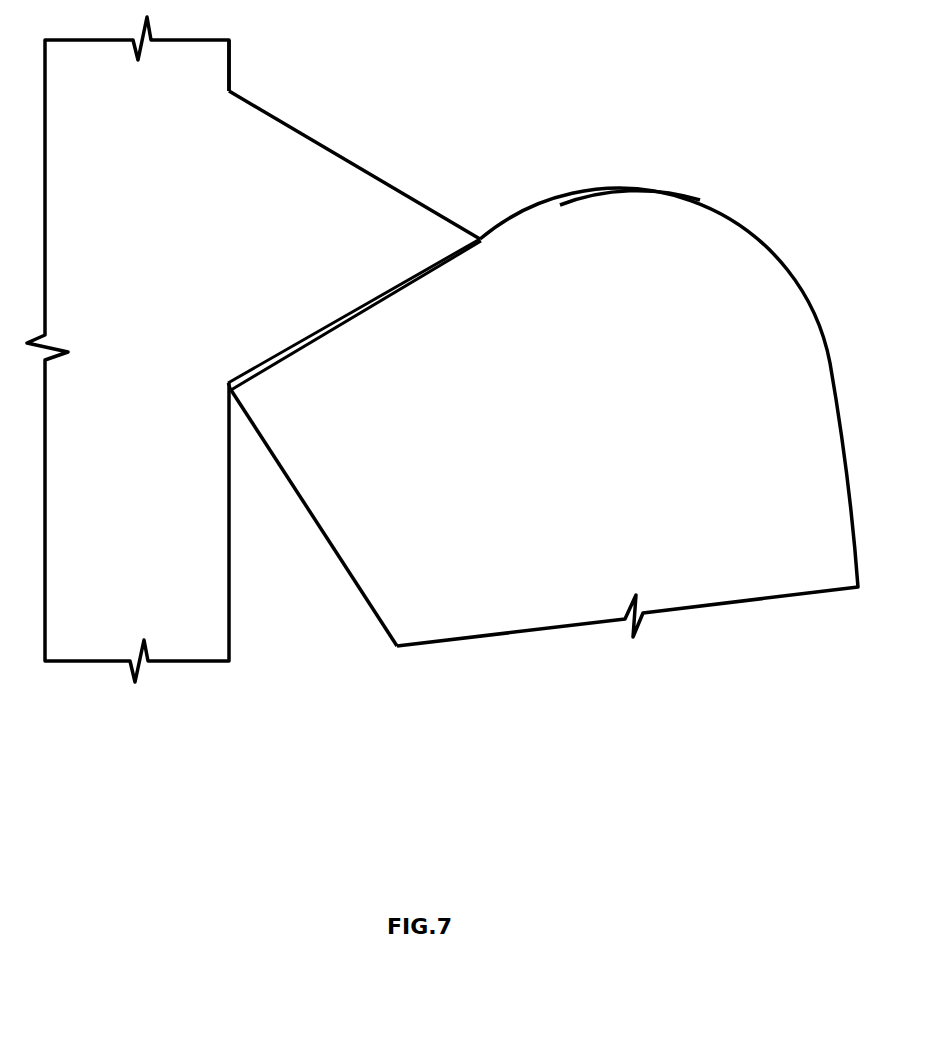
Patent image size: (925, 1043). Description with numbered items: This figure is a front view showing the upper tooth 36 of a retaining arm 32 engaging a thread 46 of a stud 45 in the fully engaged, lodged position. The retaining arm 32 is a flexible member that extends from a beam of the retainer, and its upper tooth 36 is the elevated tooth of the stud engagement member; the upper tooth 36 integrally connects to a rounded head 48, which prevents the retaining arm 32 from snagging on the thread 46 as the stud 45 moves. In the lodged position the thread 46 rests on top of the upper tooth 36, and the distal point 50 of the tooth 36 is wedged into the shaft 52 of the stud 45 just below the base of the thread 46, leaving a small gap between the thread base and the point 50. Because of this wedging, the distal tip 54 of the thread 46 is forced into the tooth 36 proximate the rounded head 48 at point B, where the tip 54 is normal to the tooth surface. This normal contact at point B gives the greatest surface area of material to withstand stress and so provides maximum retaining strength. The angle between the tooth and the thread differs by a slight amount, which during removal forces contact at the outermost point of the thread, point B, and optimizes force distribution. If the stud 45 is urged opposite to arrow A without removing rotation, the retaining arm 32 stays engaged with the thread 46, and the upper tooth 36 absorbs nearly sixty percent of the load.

The retaining arm 32 is at (665, 225).
The upper tooth 36 is at (268, 425).
The stud 45 is at (230, 70).
The thread 46 is at (395, 180).
The rounded head 48 is at (627, 202).
The distal point 50 is at (237, 392).
The shaft 52 is at (230, 545).
The distal tip 54 is at (477, 232).
The arrow A is at (698, 548).
The point B is at (483, 243).